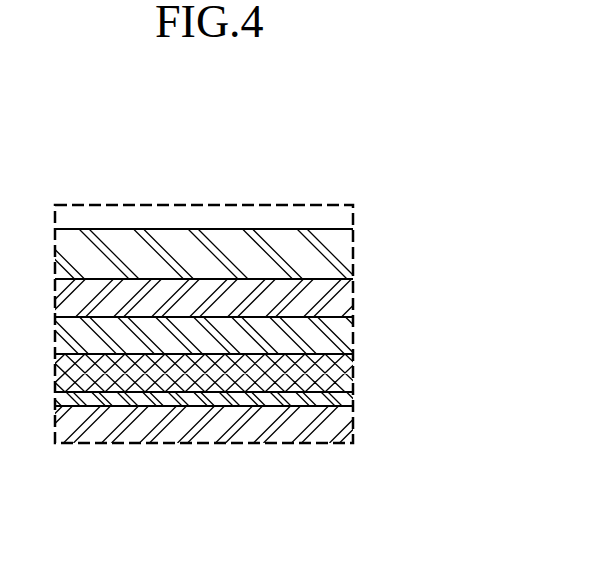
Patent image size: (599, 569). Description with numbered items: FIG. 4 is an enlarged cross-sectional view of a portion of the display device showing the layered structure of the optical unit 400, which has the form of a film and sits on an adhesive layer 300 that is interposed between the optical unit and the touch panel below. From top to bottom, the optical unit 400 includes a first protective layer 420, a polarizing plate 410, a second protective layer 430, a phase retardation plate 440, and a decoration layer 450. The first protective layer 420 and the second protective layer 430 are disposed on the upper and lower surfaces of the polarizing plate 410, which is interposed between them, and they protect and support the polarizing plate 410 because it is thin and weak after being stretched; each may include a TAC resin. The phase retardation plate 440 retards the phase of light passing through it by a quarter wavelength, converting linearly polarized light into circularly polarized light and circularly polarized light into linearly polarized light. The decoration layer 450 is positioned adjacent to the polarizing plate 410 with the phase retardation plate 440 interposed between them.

The optical unit 400 is at (252, 326).
The first protective layer 420 is at (333, 255).
The polarizing plate 410 is at (336, 297).
The second protective layer 430 is at (334, 334).
The phase retardation plate 440 is at (333, 372).
The decoration layer 450 is at (243, 402).
The adhesive layer 300 is at (335, 425).